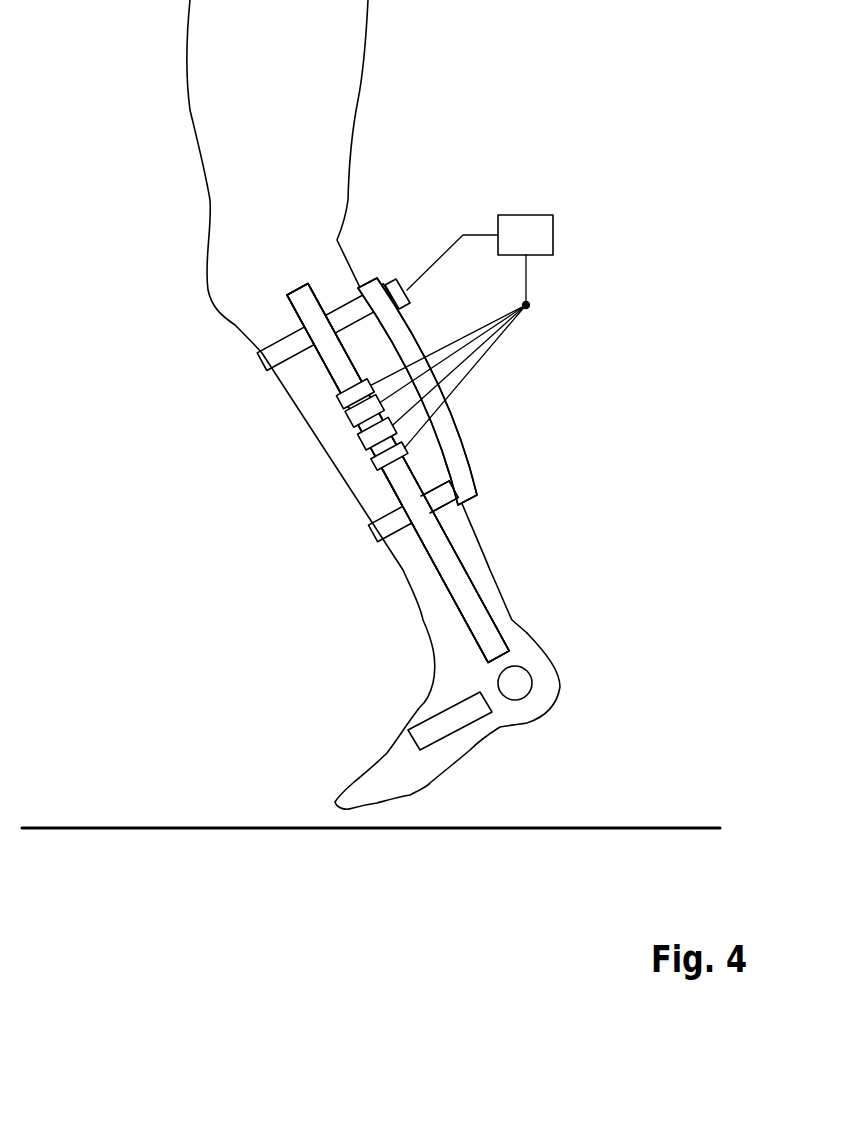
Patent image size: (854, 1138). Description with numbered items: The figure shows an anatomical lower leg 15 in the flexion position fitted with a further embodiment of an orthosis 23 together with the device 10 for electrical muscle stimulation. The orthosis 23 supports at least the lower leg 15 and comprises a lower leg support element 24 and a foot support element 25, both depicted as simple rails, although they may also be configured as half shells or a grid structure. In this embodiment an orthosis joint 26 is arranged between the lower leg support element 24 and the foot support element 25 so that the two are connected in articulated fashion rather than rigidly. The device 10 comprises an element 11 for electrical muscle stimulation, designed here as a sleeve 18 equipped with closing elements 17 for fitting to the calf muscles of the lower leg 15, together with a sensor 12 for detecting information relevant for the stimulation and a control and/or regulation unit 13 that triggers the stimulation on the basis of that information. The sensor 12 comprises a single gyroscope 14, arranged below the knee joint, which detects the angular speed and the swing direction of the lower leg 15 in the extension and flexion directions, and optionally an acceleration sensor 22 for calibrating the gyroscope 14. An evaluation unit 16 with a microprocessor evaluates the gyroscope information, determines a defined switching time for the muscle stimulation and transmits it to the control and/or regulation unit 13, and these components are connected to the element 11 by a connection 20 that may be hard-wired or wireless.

The device 10 is at (522, 424).
The element for electrical muscle stimulation 11 is at (487, 460).
The sensor 12 is at (318, 397).
The control and/or regulation unit 13 is at (362, 442).
The gyroscope 14 is at (349, 419).
The lower leg 15 is at (470, 519).
The evaluation unit 16 is at (374, 464).
The closing elements 17 is at (265, 340).
The sleeve 18 is at (447, 427).
The connection 20 is at (480, 235).
The acceleration sensor 22 is at (384, 482).
The orthosis 23 is at (494, 588).
The lower leg support element 24 is at (457, 575).
The foot support element 25 is at (432, 722).
The orthosis joint 26 is at (527, 683).